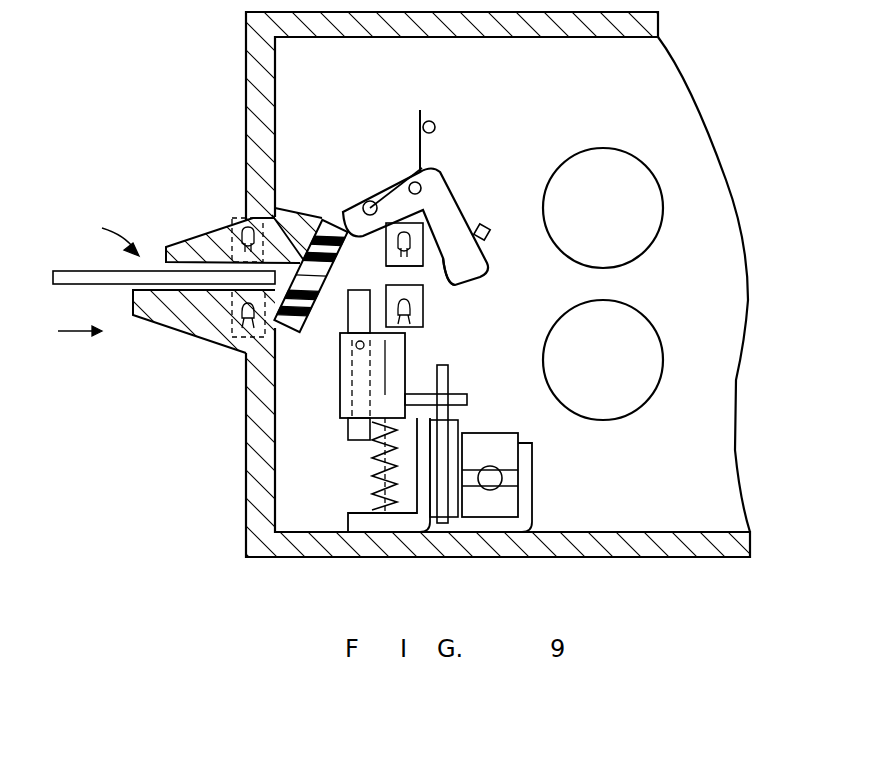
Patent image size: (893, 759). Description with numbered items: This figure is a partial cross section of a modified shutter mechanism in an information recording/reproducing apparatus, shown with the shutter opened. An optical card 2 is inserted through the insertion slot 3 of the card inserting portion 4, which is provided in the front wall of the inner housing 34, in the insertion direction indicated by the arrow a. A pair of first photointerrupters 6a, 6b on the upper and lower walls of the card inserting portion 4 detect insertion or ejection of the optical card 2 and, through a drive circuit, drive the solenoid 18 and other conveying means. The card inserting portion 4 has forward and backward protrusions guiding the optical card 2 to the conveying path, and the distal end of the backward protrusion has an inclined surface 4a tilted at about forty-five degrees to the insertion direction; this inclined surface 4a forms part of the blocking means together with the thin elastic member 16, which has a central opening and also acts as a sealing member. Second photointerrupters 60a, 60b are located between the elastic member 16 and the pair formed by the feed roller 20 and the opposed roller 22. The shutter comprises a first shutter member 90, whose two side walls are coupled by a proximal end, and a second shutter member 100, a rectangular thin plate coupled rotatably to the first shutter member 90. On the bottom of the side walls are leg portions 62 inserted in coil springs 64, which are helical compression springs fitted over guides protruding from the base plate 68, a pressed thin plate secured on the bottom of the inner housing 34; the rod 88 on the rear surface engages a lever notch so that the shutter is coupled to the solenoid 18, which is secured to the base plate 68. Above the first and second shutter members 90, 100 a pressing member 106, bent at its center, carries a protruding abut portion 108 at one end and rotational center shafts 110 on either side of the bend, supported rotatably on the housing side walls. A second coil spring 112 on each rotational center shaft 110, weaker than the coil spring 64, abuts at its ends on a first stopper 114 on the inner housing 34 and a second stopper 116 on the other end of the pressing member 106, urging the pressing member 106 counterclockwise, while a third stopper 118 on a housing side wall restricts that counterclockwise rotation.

The optical card 2 is at (72, 271).
The insertion slot 3 is at (109, 236).
The arrow a is at (80, 344).
The card inserting portion 4 is at (166, 250).
The inclined surface 4a is at (290, 212).
The first photointerrupter 6a is at (236, 232).
The first photointerrupter 6b is at (232, 338).
The elastic member 16 is at (291, 337).
The solenoid 18 is at (505, 452).
The feed roller 20 is at (648, 385).
The opposed roller 22 is at (603, 152).
The inner housing 34 is at (246, 76).
The second photointerrupter 60a is at (413, 258).
The second photointerrupter 60b is at (420, 316).
The leg portion 62 is at (372, 462).
The coil spring 64 is at (370, 497).
The base plate 68 is at (460, 525).
The rod 88 is at (463, 394).
The first shutter member 90 is at (341, 400).
The second shutter member 100 is at (360, 300).
The pressing member 106 is at (511, 202).
The abut portion 108 is at (472, 265).
The rotational center shaft 110 is at (410, 184).
The second coil spring 112 is at (422, 150).
The first stopper 114 is at (433, 122).
The second stopper 116 is at (368, 202).
The third stopper 118 is at (488, 238).